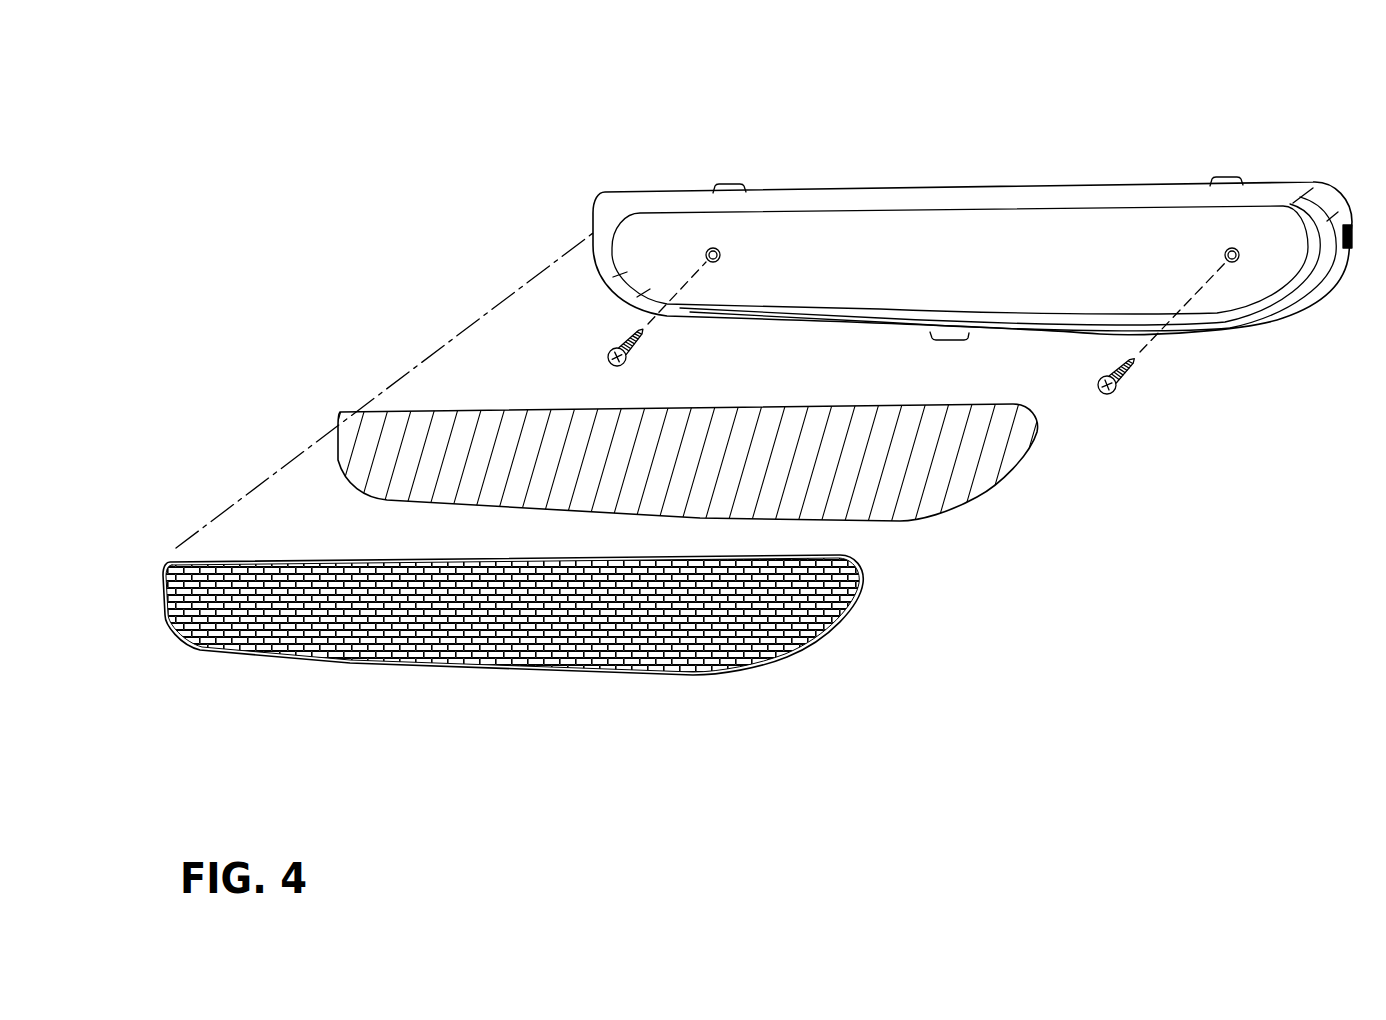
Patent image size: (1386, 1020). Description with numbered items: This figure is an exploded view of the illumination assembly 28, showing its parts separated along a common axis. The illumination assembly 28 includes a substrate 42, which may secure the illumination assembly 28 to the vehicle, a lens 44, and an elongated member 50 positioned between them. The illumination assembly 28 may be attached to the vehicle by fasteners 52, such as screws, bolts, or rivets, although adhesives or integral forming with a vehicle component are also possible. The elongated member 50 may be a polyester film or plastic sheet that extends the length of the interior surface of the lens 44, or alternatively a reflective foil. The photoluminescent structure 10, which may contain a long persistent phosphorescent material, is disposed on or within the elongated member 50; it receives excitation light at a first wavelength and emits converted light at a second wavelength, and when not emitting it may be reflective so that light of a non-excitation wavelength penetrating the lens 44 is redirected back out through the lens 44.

The photoluminescent structure 10 is at (381, 441).
The illumination assembly 28 is at (926, 158).
The substrate 42 is at (1315, 205).
The lens 44 is at (720, 660).
The elongated member 50 is at (977, 498).
The fasteners 52 is at (627, 359).